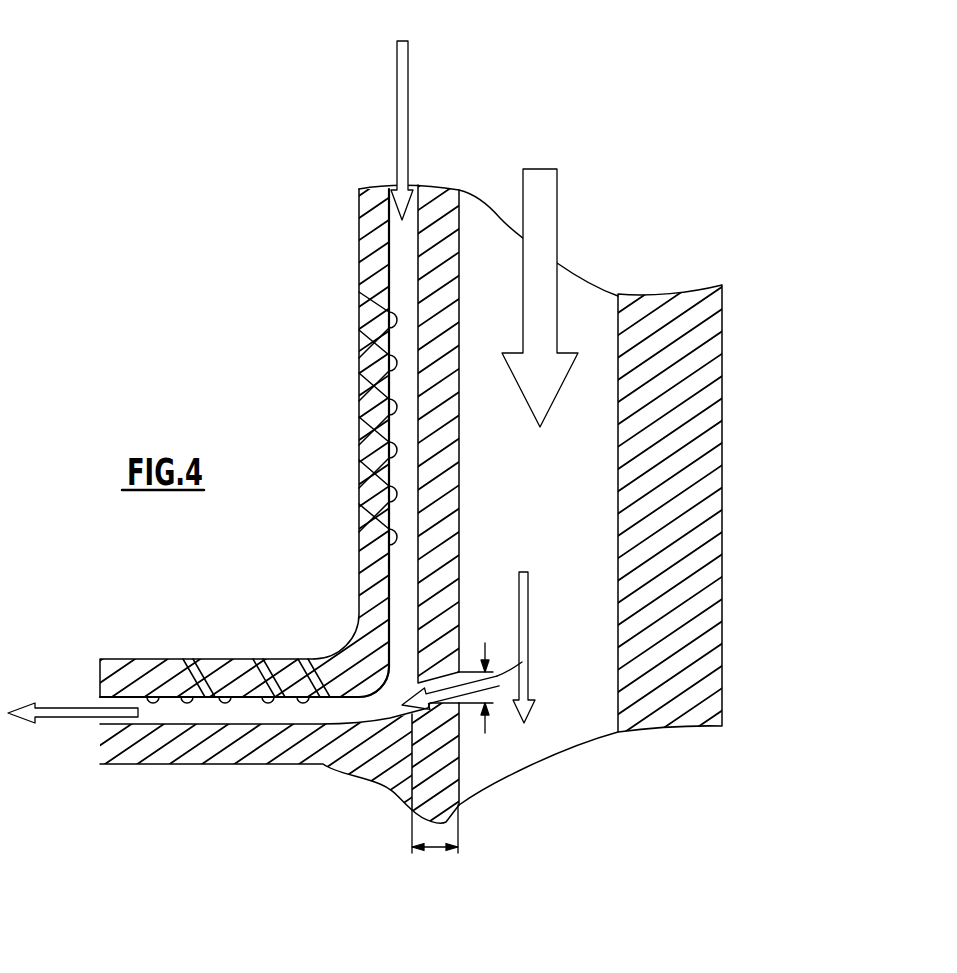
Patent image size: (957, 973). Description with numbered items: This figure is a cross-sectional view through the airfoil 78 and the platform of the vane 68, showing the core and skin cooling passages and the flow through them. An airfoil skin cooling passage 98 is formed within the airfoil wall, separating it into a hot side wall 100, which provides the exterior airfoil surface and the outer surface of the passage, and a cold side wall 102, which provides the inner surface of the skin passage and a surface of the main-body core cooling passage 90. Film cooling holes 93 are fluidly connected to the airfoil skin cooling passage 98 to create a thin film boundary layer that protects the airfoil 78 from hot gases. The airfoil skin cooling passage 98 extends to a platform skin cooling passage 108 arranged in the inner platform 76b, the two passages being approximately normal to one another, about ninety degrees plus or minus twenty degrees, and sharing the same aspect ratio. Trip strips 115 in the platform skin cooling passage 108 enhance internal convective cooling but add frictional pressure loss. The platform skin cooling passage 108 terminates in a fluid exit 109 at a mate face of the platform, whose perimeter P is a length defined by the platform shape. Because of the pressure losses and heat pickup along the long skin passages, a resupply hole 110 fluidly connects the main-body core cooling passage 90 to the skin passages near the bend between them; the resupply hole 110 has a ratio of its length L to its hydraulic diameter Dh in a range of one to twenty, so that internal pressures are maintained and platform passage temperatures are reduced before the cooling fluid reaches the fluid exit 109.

The vane 68 is at (320, 412).
The inner platform 76b is at (175, 678).
The airfoil 78 is at (722, 320).
The main-body core cooling passage 90 is at (598, 631).
The film cooling holes 93 is at (372, 380).
The airfoil skin cooling passage 98 is at (409, 304).
The hot side wall 100 is at (372, 490).
The cold side wall 102 is at (441, 495).
The platform skin cooling passage 108 is at (220, 716).
The fluid exit 109 is at (98, 724).
The resupply hole 110 is at (459, 672).
The trip strips 115 is at (392, 541).
The perimeter P is at (100, 676).
The hydraulic diameter Dh is at (499, 686).
The length L is at (437, 850).